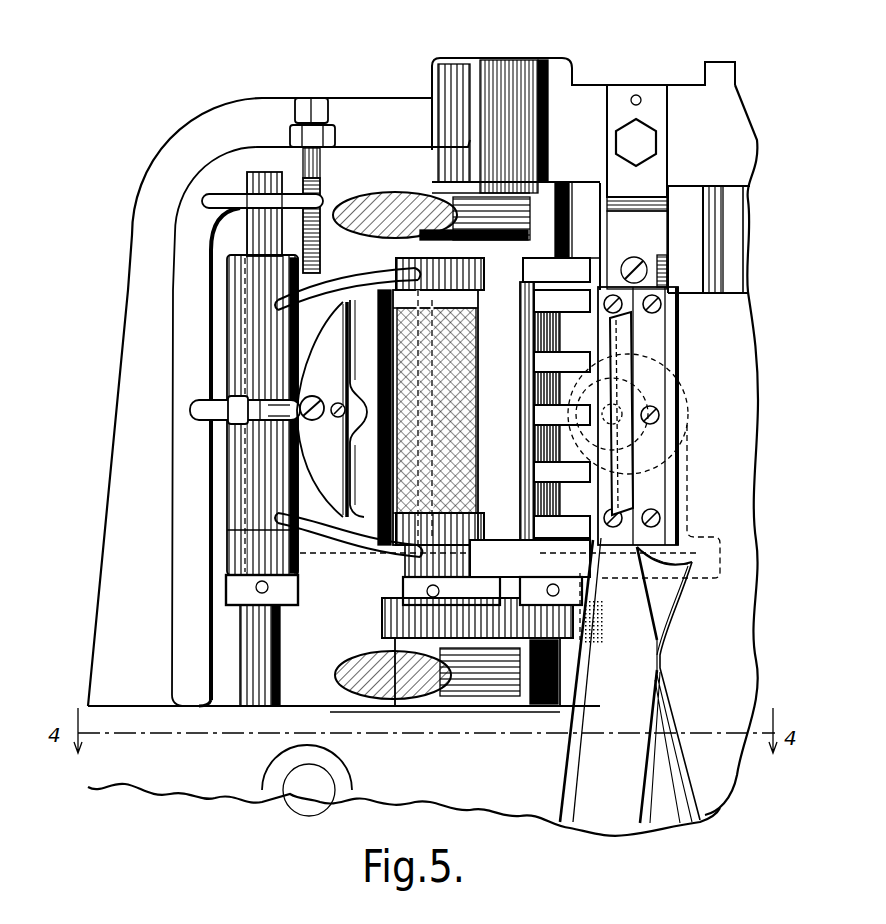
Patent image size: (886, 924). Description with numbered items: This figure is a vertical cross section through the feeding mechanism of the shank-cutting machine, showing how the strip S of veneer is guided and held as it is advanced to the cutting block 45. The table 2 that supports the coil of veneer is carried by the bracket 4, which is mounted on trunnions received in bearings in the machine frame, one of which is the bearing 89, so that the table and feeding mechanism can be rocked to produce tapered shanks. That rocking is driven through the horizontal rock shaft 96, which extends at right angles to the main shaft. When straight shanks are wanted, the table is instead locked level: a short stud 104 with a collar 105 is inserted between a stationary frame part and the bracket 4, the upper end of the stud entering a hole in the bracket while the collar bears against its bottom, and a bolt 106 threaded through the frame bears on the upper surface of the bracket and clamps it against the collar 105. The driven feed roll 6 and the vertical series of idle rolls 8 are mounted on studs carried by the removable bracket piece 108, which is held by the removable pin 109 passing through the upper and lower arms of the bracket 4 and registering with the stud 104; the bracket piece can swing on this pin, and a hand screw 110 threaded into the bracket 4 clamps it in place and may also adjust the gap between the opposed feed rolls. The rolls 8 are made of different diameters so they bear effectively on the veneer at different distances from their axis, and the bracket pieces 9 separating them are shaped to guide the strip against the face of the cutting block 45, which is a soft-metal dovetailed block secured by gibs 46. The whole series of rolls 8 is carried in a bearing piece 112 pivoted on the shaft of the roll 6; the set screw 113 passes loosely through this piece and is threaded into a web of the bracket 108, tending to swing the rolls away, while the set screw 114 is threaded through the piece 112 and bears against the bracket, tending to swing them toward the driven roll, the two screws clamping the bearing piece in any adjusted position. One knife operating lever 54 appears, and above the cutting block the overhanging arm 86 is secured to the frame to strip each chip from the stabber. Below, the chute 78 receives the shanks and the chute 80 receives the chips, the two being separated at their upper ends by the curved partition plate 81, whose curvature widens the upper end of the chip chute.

The table 2 is at (779, 428).
The bracket 4 is at (330, 280).
The feed roll 6 is at (400, 344).
The idle rolls 8 is at (546, 503).
The bracket pieces 9 is at (625, 387).
The cutting block 45 is at (636, 305).
The gibs 46 is at (650, 296).
The knife operating lever 54 is at (393, 205).
The chute 78 is at (712, 800).
The chute 80 is at (587, 778).
The partition plate 81 is at (675, 598).
The overhanging arm 86 is at (665, 255).
The bearing 89 is at (687, 435).
The rock shaft 96 is at (298, 780).
The stud 104 is at (254, 642).
The collar 105 is at (226, 590).
The bolt 106 is at (320, 98).
The bracket piece 108 is at (235, 357).
The pin 109 is at (256, 182).
The hand screw 110 is at (238, 414).
The bearing piece 112 is at (503, 520).
The set screw 113 is at (311, 397).
The set screw 114 is at (337, 419).
The strip S is at (614, 335).